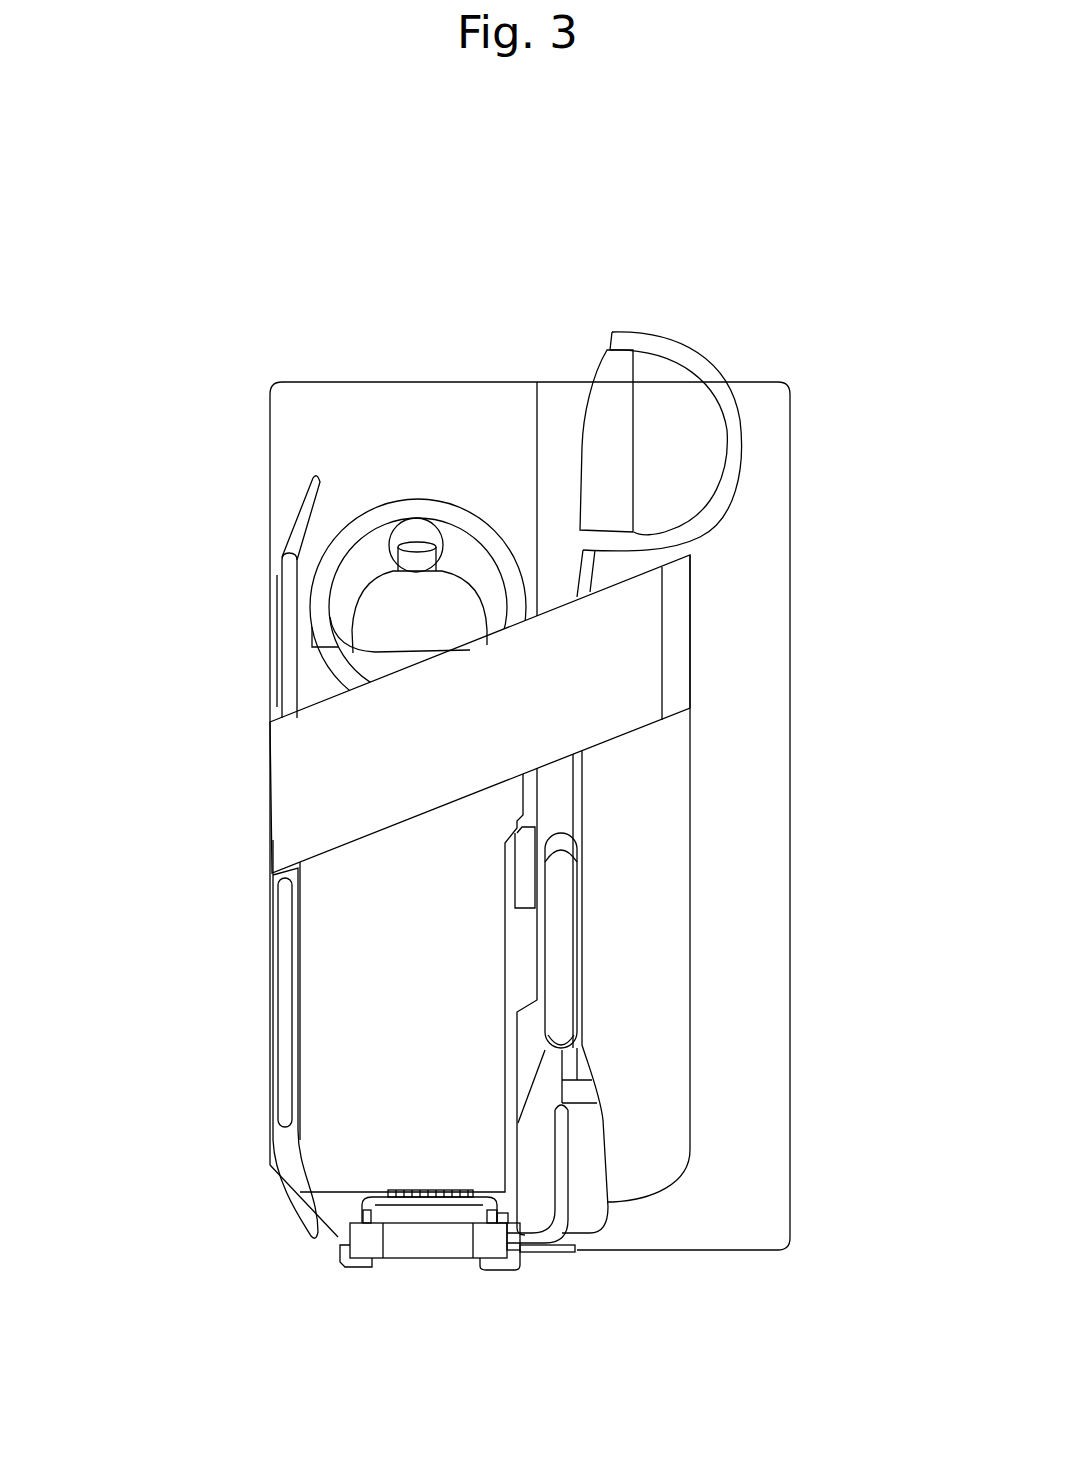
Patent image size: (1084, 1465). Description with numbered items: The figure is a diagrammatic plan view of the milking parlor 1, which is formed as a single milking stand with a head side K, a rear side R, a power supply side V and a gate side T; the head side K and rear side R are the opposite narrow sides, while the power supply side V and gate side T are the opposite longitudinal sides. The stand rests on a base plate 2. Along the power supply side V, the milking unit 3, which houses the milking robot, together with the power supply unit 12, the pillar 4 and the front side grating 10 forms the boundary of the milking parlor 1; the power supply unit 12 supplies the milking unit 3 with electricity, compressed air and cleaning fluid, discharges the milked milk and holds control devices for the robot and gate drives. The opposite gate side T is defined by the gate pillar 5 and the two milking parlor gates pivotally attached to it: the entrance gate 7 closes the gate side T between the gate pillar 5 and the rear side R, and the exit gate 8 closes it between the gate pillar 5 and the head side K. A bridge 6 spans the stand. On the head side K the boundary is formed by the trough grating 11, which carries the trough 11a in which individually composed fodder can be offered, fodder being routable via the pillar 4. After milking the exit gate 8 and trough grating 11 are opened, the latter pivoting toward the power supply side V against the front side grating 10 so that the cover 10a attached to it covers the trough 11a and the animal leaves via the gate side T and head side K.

The milking parlor 1 is at (367, 250).
The base plate 2 is at (767, 468).
The milking unit 3 is at (553, 803).
The pillar 4 is at (677, 642).
The gate pillar 5 is at (287, 800).
The bridge 6 is at (605, 683).
The entrance gate 7 is at (285, 952).
The exit gate 8 is at (285, 597).
The front side grating 10 is at (680, 340).
The cover 10a is at (612, 385).
The trough grating 11 is at (372, 512).
The trough 11a is at (415, 510).
The power supply unit 12 is at (645, 995).
The head side K is at (482, 298).
The gate side T is at (190, 826).
The power supply side V is at (808, 838).
The rear side R is at (426, 1278).